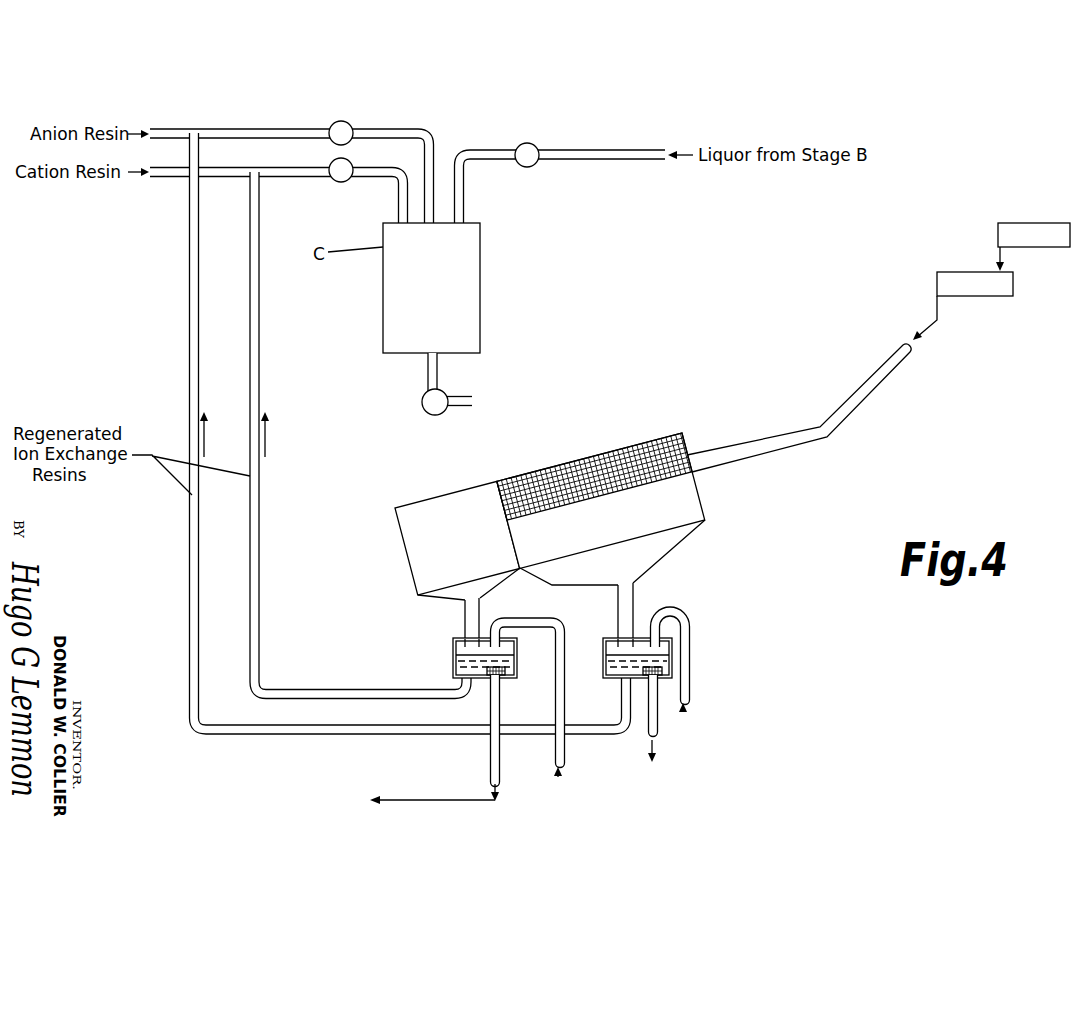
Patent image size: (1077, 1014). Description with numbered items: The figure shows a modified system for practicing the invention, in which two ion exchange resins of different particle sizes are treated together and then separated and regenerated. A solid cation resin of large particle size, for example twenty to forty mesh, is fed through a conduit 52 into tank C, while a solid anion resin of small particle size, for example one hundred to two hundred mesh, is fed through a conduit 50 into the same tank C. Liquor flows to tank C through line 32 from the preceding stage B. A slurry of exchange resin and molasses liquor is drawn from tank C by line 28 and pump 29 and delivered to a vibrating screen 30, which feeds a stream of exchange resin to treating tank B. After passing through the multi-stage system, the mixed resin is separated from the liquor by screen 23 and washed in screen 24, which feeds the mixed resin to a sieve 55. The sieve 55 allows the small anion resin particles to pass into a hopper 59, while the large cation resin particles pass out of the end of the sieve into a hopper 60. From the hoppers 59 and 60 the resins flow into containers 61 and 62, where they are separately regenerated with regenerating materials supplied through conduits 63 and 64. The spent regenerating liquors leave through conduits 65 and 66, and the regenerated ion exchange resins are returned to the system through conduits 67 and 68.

The screen 23 is at (1018, 222).
The screen 24 is at (980, 297).
The line 28 is at (466, 395).
The pump 29 is at (421, 394).
The vibrating screen 30 is at (476, 401).
The line 32 is at (618, 148).
The conduit 50 is at (243, 128).
The conduit 52 is at (372, 178).
The sieve 55 is at (541, 487).
The hopper 59 is at (680, 538).
The hopper 60 is at (410, 538).
The container 61 is at (612, 663).
The container 62 is at (460, 663).
The conduit 63 is at (688, 678).
The conduit 64 is at (563, 716).
The conduit 65 is at (643, 720).
The conduit 66 is at (503, 714).
The conduit 67 is at (258, 377).
The conduit 68 is at (190, 283).